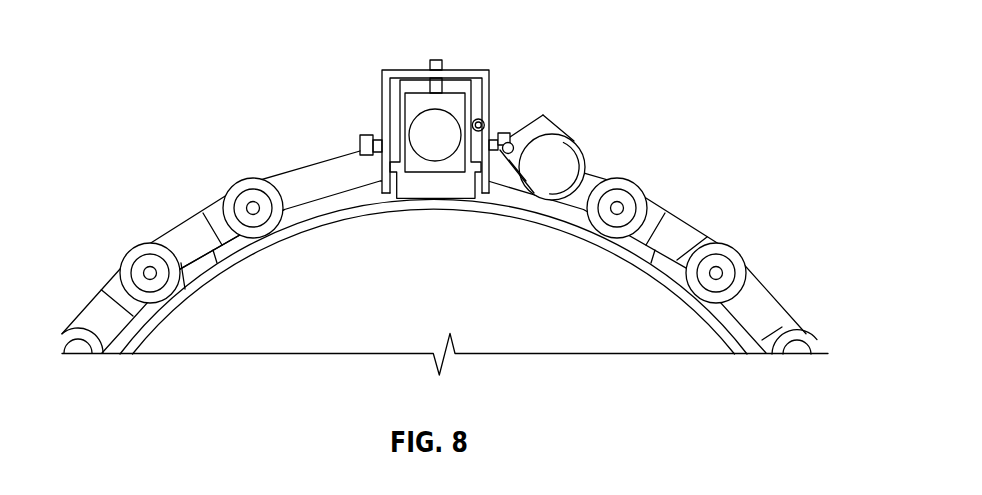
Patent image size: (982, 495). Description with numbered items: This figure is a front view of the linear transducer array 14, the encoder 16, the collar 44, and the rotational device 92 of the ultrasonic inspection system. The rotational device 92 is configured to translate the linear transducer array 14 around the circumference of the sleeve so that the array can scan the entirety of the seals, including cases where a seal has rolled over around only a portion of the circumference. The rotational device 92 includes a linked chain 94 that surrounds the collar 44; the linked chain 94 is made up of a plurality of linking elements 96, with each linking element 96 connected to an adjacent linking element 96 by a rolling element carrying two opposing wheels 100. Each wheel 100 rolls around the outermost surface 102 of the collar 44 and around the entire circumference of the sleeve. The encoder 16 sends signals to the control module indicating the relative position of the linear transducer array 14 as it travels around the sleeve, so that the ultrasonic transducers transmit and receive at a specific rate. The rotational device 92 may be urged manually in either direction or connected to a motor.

The linear transducer array 14 is at (483, 76).
The encoder 16 is at (557, 171).
The collar 44 is at (433, 299).
The rotational device 92 is at (793, 47).
The linked chain 94 is at (458, 252).
The linking element 96 is at (653, 248).
The wheel 100 is at (138, 254).
The outermost surface 102 is at (217, 263).